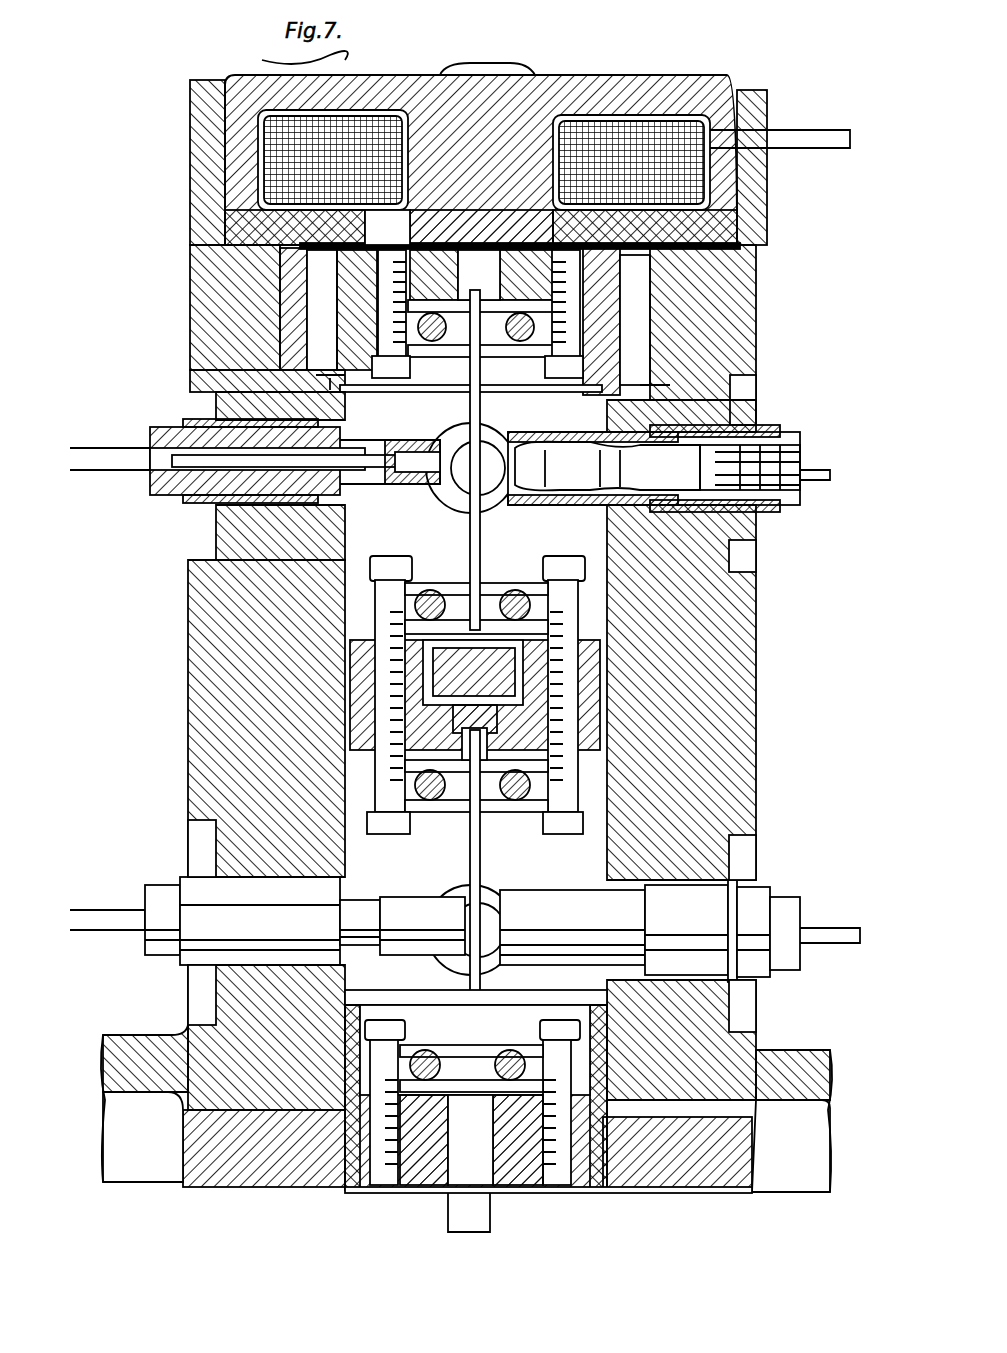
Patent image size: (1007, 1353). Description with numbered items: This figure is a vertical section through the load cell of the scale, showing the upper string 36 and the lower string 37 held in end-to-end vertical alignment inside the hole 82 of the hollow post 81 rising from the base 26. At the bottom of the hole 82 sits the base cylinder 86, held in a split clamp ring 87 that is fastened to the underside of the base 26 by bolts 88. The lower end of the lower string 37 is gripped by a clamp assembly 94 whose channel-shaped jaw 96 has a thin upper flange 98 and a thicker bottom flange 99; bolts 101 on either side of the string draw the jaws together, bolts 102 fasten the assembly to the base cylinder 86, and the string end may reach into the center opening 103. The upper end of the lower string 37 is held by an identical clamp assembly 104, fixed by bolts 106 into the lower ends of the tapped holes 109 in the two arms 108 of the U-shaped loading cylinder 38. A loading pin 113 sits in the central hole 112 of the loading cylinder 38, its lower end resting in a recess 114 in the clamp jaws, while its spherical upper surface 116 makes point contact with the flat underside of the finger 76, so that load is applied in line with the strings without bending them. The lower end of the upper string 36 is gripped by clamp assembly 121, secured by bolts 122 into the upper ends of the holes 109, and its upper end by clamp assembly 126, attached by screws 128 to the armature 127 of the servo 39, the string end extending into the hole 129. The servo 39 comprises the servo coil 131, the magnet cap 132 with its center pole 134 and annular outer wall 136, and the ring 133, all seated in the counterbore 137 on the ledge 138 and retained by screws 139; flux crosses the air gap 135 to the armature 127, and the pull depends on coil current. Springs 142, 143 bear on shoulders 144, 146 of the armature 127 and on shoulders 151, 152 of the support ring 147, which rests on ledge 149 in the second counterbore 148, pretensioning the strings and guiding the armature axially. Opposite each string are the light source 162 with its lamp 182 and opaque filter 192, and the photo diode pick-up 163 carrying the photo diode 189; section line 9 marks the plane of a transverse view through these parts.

The section line 9- 9 is at (458, 408).
The base 26 is at (100, 1070).
The upper vibrating member (upper string) 36 is at (470, 531).
The lower vibrating member (lower string) 37 is at (470, 845).
The loading cylinder 38 is at (345, 683).
The servo 39 is at (562, 72).
The finger 76 is at (506, 674).
The hollow post 81 is at (188, 597).
The hole 82 is at (350, 548).
The base cylinder 86 is at (345, 1160).
The split clamp ring 87 is at (712, 1180).
The bolts 88 is at (466, 1230).
The clamp assembly 94 is at (585, 1062).
The jaw 96 is at (367, 1062).
The upper flange 98 is at (512, 1045).
The bottom flange 99 is at (471, 1140).
The bolts 101 is at (455, 1080).
The bolts 102 is at (570, 1033).
The center opening 103 is at (487, 1146).
The clamp assembly 104 is at (588, 783).
The bolts 106 is at (392, 822).
The arms 108 is at (355, 640).
The tapped holes 109 is at (585, 710).
The hole 112 is at (465, 728).
The loading pin 113 is at (580, 735).
The recess 114 is at (494, 800).
The upper surface 116 is at (457, 678).
The clamp assembly 121 is at (585, 600).
The bolts 122 is at (555, 568).
The clamp assembly 126 is at (585, 328).
The armature 127 is at (447, 286).
The screws 128 is at (448, 296).
The hole 129 is at (495, 276).
The servo coil 131 is at (640, 115).
The magnet cap 132 is at (730, 87).
The ring 133 is at (740, 221).
The center pole 134 is at (503, 162).
The air gap 135 is at (497, 240).
The annular outer wall 136 is at (232, 131).
The counterbore 137 is at (743, 187).
The ledge 138 is at (740, 245).
The screws 139 is at (470, 68).
The spring 142 is at (282, 278).
The spring 143 is at (300, 365).
The shoulder 144 is at (282, 300).
The shoulder 146 is at (330, 378).
The support ring 147 is at (685, 318).
The second counterbore 148 is at (670, 340).
The ledge 149 is at (720, 392).
The shoulder 151 is at (650, 272).
The shoulder 152 is at (668, 372).
The light source 162 is at (808, 452).
The photo diode pick-up 163 is at (147, 435).
The lamp 182 is at (560, 446).
The photo diode 189 is at (452, 452).
The opaque filter 192 is at (528, 492).